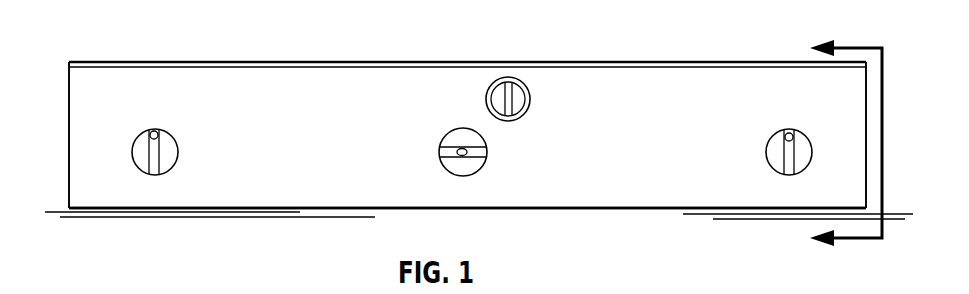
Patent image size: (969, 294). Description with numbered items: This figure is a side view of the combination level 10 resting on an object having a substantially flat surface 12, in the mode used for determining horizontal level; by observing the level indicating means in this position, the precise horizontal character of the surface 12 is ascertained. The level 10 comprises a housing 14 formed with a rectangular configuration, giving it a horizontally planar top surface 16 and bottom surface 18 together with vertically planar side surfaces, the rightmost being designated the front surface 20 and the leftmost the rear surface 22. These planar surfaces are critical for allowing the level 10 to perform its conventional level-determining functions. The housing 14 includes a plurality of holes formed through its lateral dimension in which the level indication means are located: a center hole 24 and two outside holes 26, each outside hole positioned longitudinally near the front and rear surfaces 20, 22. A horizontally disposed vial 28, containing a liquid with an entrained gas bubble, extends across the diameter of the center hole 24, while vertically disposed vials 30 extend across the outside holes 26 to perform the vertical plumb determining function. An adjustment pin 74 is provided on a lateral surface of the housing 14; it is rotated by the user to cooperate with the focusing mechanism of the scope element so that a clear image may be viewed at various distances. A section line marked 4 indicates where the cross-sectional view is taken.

The combination level 10 is at (489, 136).
The flat surface 12 is at (58, 208).
The housing 14 is at (673, 168).
The top surface 16 is at (381, 61).
The bottom surface 18 is at (661, 209).
The front surface 20 is at (867, 108).
The rear surface 22 is at (69, 105).
The center hole 24 is at (458, 130).
The outside holes 26 is at (167, 131).
The horizontally disposed vial 28 is at (456, 159).
The vertically disposed vials 30 is at (786, 161).
The adjustment pin 74 is at (531, 99).
The section line 4- 4 is at (846, 151).